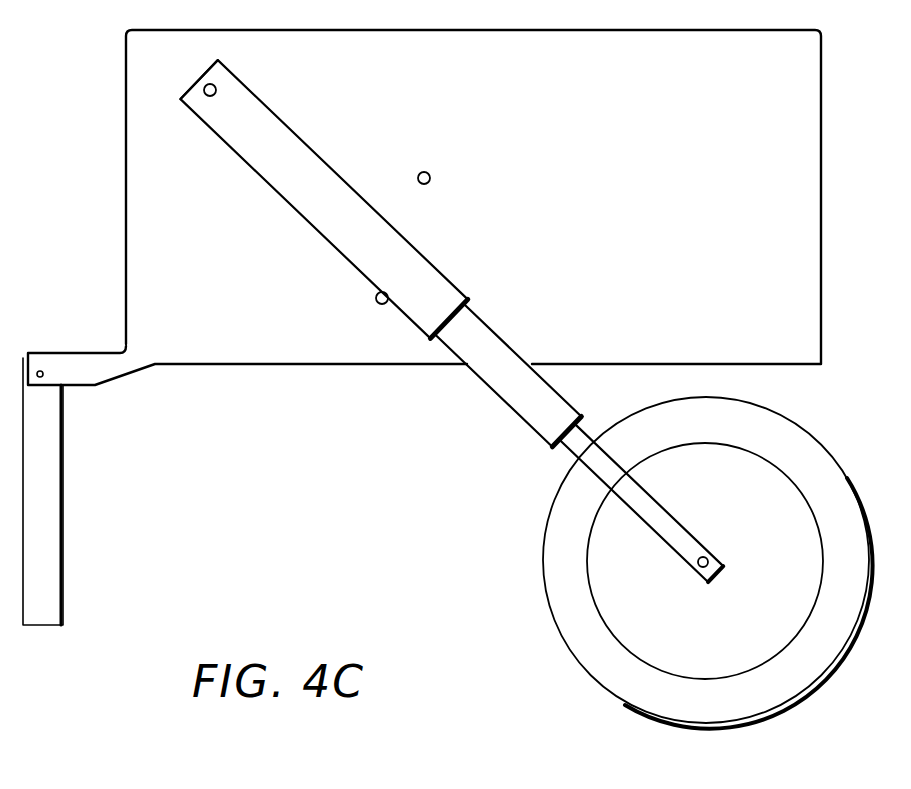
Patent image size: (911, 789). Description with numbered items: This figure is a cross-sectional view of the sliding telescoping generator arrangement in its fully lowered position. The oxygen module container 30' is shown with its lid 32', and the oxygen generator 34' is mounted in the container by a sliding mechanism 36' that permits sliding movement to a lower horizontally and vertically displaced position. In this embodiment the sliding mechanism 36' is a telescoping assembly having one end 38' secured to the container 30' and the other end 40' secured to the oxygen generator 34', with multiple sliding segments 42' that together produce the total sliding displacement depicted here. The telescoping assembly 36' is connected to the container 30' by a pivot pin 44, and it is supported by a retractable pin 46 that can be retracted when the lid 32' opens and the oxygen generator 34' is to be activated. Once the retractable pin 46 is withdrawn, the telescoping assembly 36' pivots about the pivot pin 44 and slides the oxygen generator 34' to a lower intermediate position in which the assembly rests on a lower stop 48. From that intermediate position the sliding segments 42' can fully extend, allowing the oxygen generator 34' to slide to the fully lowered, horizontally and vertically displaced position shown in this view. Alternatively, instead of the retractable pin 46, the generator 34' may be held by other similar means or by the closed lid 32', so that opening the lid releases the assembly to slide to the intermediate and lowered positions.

The oxygen module container 30' is at (424, 207).
The lid 32' is at (77, 491).
The oxygen generator 34' is at (668, 563).
The sliding mechanism 36' is at (323, 199).
The one end 38' is at (192, 67).
The other end 40' is at (724, 528).
The sliding segments 42' is at (583, 447).
The pivot pin 44 is at (217, 86).
The retractable pin 46 is at (428, 172).
The lower stop 48 is at (377, 304).